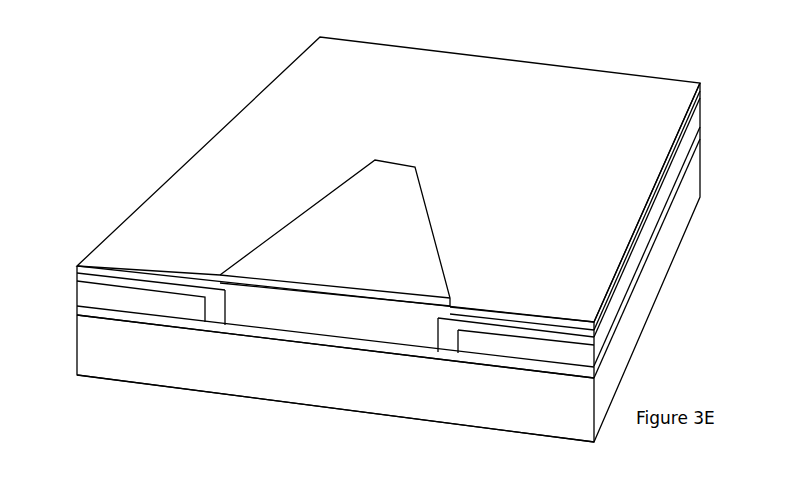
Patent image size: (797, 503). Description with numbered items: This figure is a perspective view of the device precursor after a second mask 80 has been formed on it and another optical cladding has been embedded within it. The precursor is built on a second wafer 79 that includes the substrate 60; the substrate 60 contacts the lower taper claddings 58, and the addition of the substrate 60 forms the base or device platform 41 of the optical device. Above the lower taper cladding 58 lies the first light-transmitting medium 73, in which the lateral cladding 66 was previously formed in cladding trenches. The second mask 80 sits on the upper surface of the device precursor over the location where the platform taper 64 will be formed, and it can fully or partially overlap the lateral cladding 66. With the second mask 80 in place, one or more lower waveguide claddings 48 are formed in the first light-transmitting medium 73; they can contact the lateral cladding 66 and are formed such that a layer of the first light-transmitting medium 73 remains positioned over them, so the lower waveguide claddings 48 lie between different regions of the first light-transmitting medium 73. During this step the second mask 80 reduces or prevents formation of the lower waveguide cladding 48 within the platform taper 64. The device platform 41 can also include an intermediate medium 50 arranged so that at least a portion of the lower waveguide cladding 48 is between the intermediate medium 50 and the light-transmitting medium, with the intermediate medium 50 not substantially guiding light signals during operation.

The device platform 41 is at (707, 200).
The lower waveguide cladding 48 is at (158, 282).
The intermediate medium 50 is at (128, 298).
The lower taper cladding 58 is at (352, 343).
The substrate 60 is at (305, 383).
The platform taper 64 is at (318, 341).
The lateral cladding 66 is at (222, 298).
The first light-transmitting medium 73 is at (313, 317).
The second wafer 79 is at (56, 371).
The second mask 80 is at (407, 232).